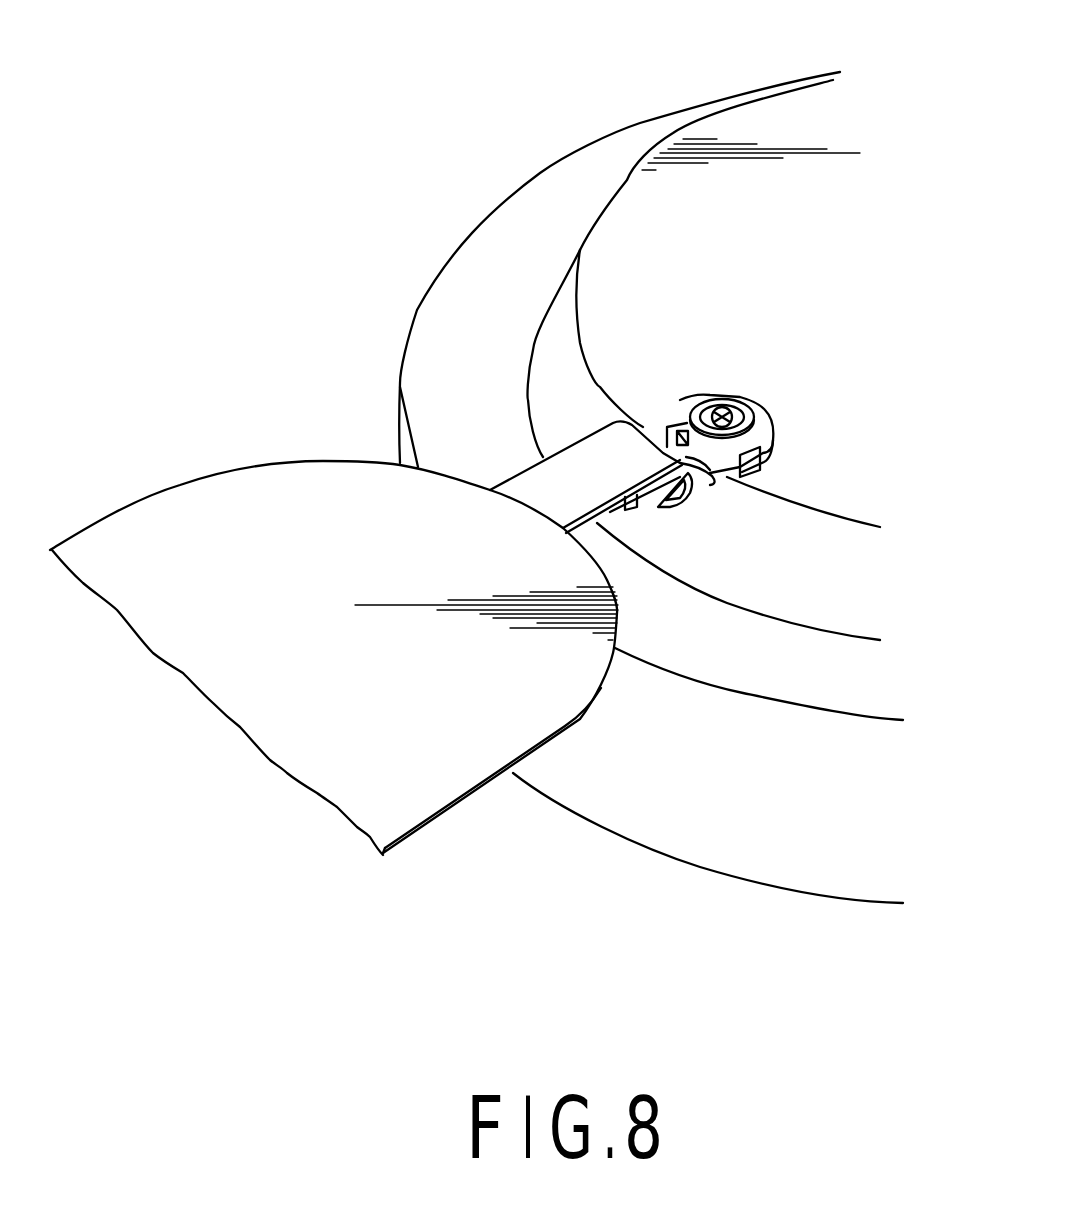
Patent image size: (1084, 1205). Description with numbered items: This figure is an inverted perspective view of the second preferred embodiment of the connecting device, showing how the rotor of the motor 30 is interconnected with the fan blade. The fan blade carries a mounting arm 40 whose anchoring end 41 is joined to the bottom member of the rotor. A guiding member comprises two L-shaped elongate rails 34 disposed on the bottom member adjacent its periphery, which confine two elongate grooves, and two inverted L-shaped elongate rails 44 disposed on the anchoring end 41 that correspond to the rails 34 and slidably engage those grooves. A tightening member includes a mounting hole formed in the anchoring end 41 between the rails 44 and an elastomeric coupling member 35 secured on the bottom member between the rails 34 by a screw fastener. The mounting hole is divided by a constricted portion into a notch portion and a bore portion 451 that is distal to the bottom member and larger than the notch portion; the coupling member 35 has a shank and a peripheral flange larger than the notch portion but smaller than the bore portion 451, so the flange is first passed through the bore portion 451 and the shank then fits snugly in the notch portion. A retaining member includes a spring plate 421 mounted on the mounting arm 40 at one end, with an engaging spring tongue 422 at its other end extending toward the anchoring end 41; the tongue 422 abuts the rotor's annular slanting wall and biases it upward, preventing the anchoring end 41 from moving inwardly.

The motor 30 is at (600, 141).
The mounting arm 40 is at (513, 473).
The L-shaped elongate rails 34 is at (727, 480).
The elastomeric coupling member 35 is at (736, 412).
The anchoring end 41 is at (715, 398).
The inverted L-shaped elongate rails 44 is at (762, 462).
The spring plate 421 is at (648, 498).
The engaging spring tongue 422 is at (697, 500).
The bore portion 451 is at (667, 430).